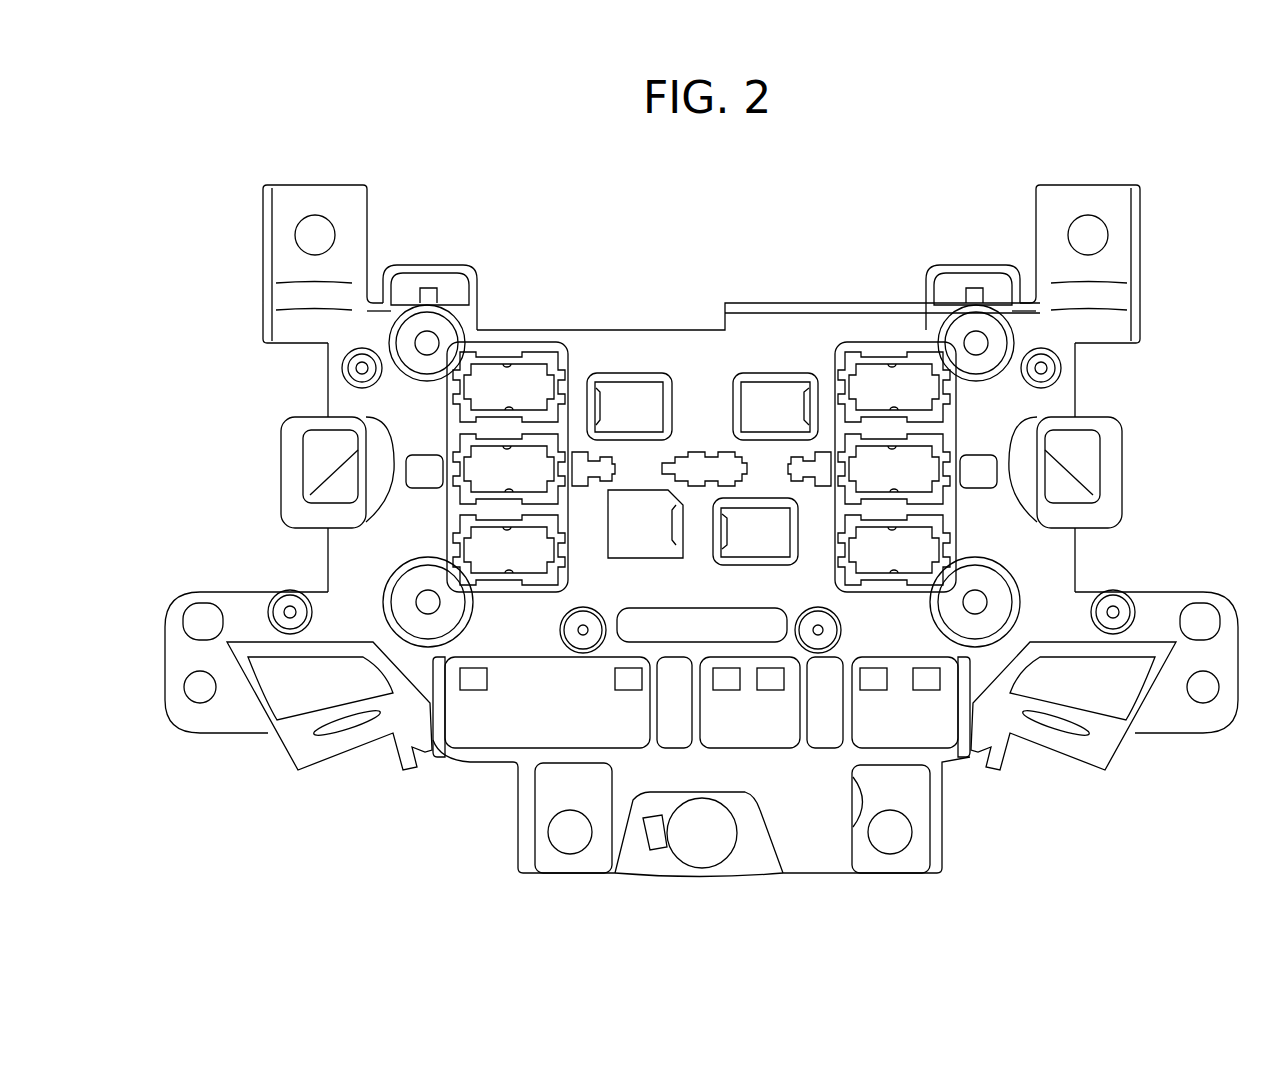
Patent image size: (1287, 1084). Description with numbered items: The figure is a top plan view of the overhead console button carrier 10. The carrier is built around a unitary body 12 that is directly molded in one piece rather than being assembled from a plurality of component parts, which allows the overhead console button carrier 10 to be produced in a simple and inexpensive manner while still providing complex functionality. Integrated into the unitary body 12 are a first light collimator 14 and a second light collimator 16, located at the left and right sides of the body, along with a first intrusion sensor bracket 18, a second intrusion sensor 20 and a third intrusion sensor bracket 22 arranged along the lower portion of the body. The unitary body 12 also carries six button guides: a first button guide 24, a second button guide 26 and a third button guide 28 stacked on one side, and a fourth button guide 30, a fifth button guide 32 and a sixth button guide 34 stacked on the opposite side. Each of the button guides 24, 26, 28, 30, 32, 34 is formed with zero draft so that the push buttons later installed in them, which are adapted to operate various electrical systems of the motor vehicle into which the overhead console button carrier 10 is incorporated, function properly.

The overhead console button carrier 10 is at (503, 200).
The unitary body 12 is at (745, 335).
The first light collimator 14 is at (1115, 473).
The second light collimator 16 is at (300, 470).
The first intrusion sensor bracket 18 is at (1053, 737).
The second intrusion sensor 20 is at (703, 870).
The third intrusion sensor bracket 22 is at (342, 735).
The first button guide 24 is at (893, 365).
The second button guide 26 is at (948, 452).
The third button guide 28 is at (950, 562).
The fourth button guide 30 is at (512, 355).
The fifth button guide 32 is at (460, 447).
The sixth button guide 34 is at (458, 548).